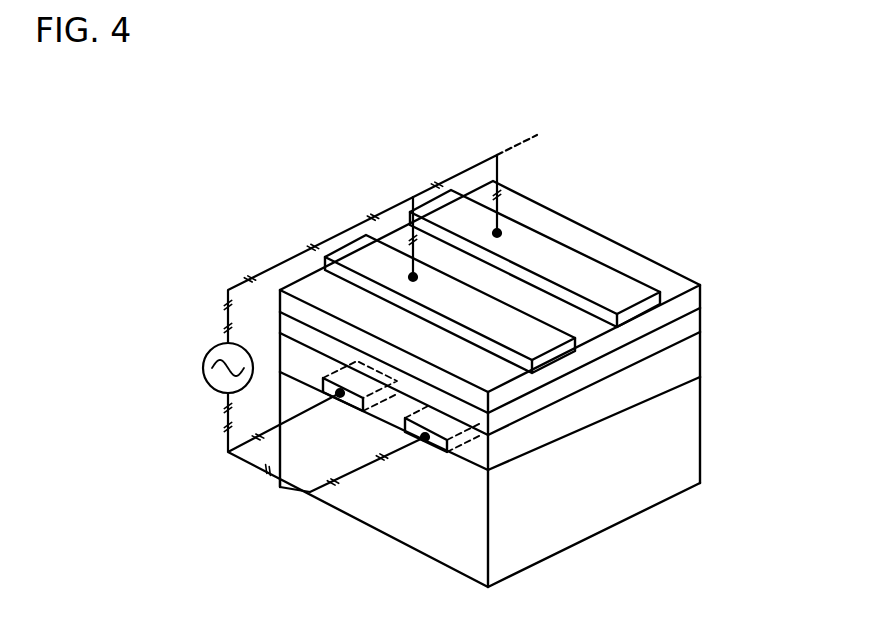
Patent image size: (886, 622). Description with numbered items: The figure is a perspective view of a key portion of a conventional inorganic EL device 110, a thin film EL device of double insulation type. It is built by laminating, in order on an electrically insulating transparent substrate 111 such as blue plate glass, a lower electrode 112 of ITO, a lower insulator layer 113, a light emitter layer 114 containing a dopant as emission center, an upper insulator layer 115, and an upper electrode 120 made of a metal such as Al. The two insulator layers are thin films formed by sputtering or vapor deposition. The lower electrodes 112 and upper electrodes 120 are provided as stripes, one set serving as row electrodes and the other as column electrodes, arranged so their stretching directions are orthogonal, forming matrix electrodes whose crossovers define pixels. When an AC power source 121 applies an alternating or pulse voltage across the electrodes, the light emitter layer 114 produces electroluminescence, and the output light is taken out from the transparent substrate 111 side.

The EL device 110 is at (659, 142).
The transparent substrate 111 is at (694, 443).
The lower electrode 112 is at (340, 400).
The lower insulator layer 113 is at (694, 358).
The light emitter layer 114 is at (694, 330).
The upper insulator layer 115 is at (694, 303).
The upper electrode 120 is at (500, 325).
The AC power source 121 is at (205, 347).